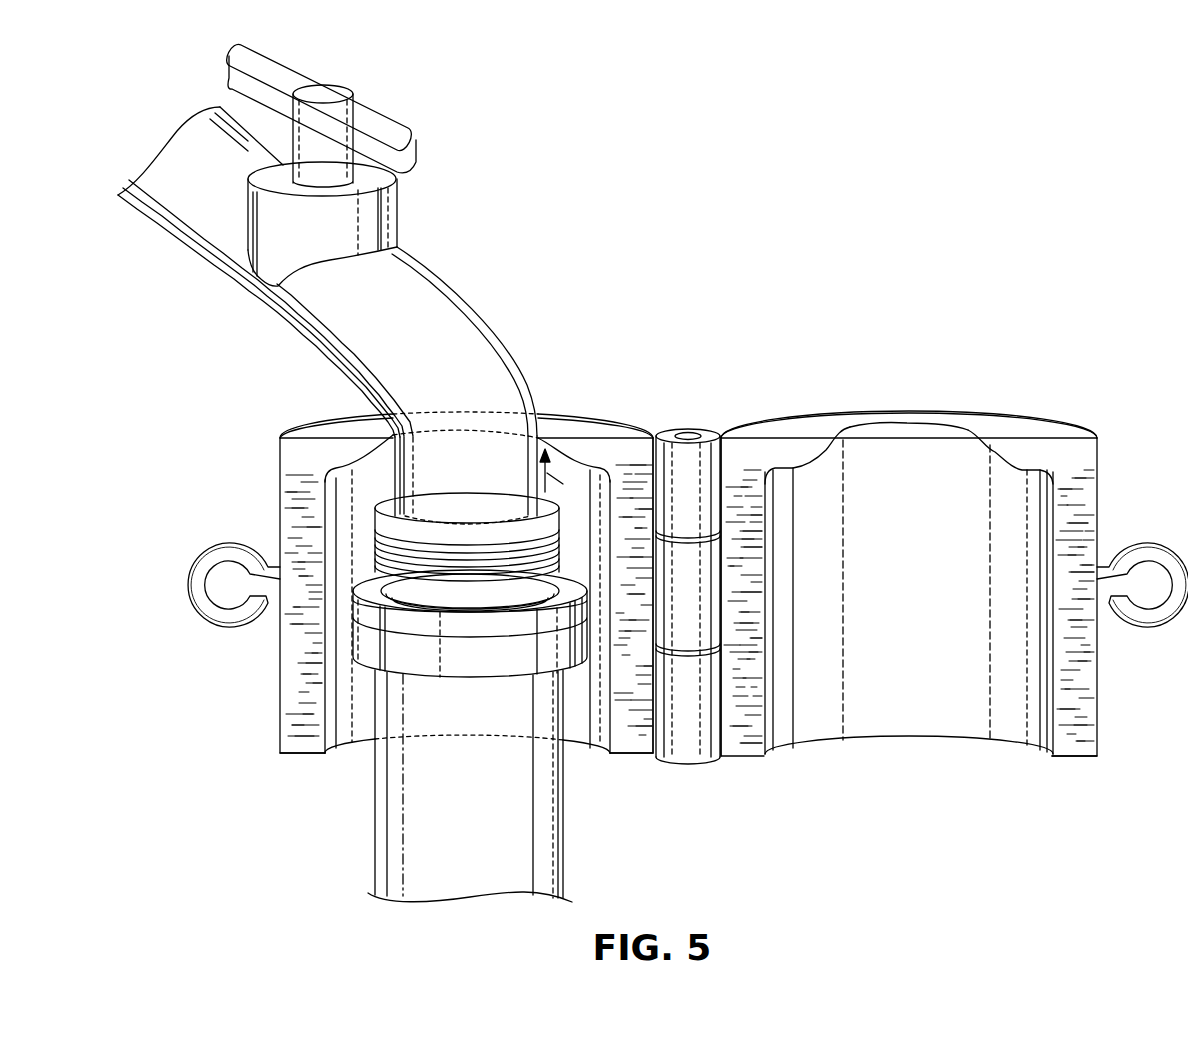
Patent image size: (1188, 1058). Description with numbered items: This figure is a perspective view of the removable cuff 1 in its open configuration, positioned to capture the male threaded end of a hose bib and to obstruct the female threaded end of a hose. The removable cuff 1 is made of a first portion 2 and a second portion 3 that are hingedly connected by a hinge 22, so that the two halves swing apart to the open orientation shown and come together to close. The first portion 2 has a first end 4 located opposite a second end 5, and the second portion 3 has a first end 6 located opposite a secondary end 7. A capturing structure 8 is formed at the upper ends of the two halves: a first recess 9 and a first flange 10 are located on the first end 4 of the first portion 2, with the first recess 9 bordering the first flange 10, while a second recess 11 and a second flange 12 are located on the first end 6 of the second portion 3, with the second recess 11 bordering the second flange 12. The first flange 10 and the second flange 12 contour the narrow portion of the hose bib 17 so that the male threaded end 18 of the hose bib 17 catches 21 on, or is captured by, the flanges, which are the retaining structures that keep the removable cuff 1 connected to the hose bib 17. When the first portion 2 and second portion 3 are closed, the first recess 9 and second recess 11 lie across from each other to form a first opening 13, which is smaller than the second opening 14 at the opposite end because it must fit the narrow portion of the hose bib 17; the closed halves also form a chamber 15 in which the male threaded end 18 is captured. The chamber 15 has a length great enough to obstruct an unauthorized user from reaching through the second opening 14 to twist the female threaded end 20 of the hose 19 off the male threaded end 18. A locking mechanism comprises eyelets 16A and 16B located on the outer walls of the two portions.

The removable cuff 1 is at (1125, 295).
The first portion 2 is at (280, 700).
The second portion 3 is at (1084, 713).
The first end 4 is at (303, 427).
The second end 5 is at (295, 757).
The first end 6 is at (1077, 430).
The secondary end 7 is at (1070, 760).
The capturing structure 8 is at (640, 425).
The first recess 9 is at (548, 432).
The first flange 10 is at (585, 425).
The second recess 11 is at (936, 415).
The second flange 12 is at (1008, 413).
The first opening 13 is at (393, 412).
The second opening 14 is at (347, 720).
The chamber 15 is at (394, 486).
The eyelet 16A is at (224, 545).
The eyelet 16B is at (1150, 538).
The hose bib 17 is at (420, 303).
The male threaded end 18 is at (378, 527).
The hose 19 is at (537, 828).
The female threaded end 20 is at (473, 674).
The catches 21 is at (567, 473).
The hinge 22 is at (688, 760).